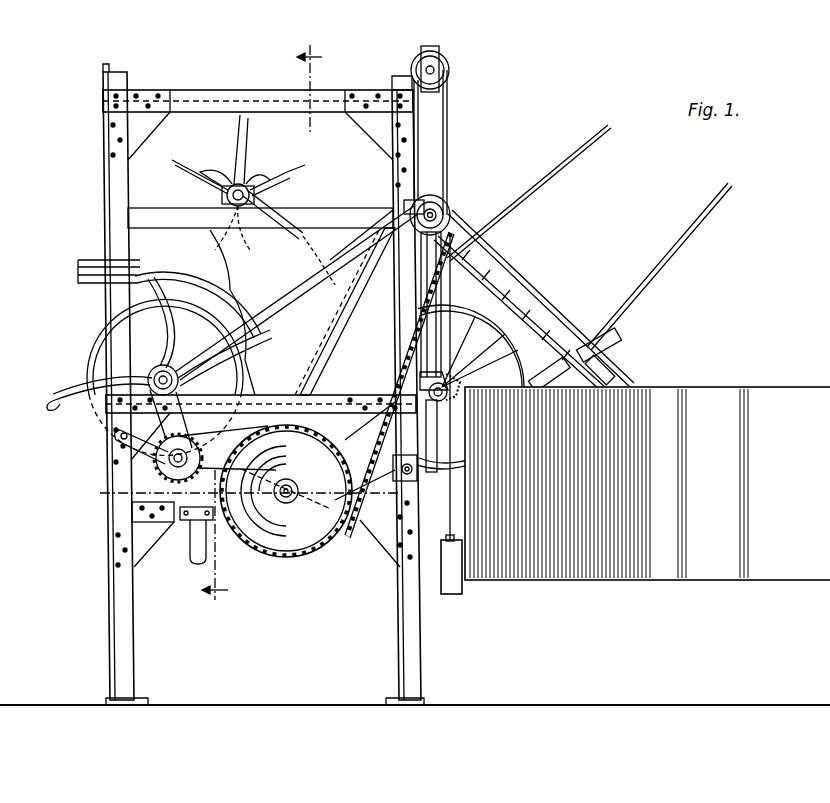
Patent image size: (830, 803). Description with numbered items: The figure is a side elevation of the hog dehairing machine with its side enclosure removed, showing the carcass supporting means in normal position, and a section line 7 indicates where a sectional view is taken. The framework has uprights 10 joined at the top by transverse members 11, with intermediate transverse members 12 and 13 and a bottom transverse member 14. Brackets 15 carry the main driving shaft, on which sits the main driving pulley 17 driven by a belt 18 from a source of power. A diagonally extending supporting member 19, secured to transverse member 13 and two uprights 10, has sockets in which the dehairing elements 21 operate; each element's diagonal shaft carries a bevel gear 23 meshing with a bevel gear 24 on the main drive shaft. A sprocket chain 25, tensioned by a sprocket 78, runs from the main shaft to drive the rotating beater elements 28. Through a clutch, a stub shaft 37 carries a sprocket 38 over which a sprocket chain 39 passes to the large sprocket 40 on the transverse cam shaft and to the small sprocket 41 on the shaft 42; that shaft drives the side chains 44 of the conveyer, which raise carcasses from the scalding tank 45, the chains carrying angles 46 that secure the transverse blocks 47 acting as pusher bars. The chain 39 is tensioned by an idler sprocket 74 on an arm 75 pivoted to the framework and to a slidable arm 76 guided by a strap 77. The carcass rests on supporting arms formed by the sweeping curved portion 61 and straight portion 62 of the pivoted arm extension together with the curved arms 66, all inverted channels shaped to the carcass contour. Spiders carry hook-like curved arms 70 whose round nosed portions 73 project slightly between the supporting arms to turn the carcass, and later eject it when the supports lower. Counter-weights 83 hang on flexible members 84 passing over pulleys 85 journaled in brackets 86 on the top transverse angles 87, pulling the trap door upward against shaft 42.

The section line 7- 7 is at (262, 322).
The uprights 10 is at (122, 615).
The transverse members 11 is at (216, 98).
The intermediate transverse member 12 is at (382, 206).
The intermediate transverse member 13 is at (118, 408).
The bottom transverse member 14 is at (372, 522).
The brackets 15 is at (434, 472).
The main driving pulley 17 is at (494, 300).
The belt 18 is at (548, 182).
The diagonally extending supporting member 19 is at (368, 225).
The dehairing elements 21 is at (338, 235).
The bevel gear 23 is at (442, 366).
The bevel gear 24 is at (452, 376).
The sprocket chain 25 is at (282, 205).
The rotating beater elements 28 is at (246, 170).
The stub shaft 37 is at (155, 380).
The sprocket 38 is at (152, 372).
The sprocket chain 39 is at (230, 301).
The large sprocket 40 is at (287, 560).
The small sprocket 41 is at (444, 204).
The shaft 42 is at (443, 214).
The side chains 44 is at (560, 338).
The scalding tank 45 is at (790, 387).
The angles 46 is at (606, 352).
The blocks 47 is at (612, 334).
The sweeping curve portion 61 is at (248, 292).
The straight portion 62 is at (80, 260).
The curved arms 66 is at (80, 274).
The curved arms 70 is at (214, 288).
The round nosed pointed portion 73 is at (50, 400).
The idler sprocket 74 is at (160, 462).
The arm 75 is at (116, 440).
The arm 76 is at (195, 560).
The strap 77 is at (190, 524).
The sprocket 78 is at (470, 290).
The counter-weights 83 is at (457, 598).
The flexible members 84 is at (448, 127).
The pulleys 85 is at (449, 66).
The brackets 86 is at (430, 54).
The angles 87 is at (110, 76).